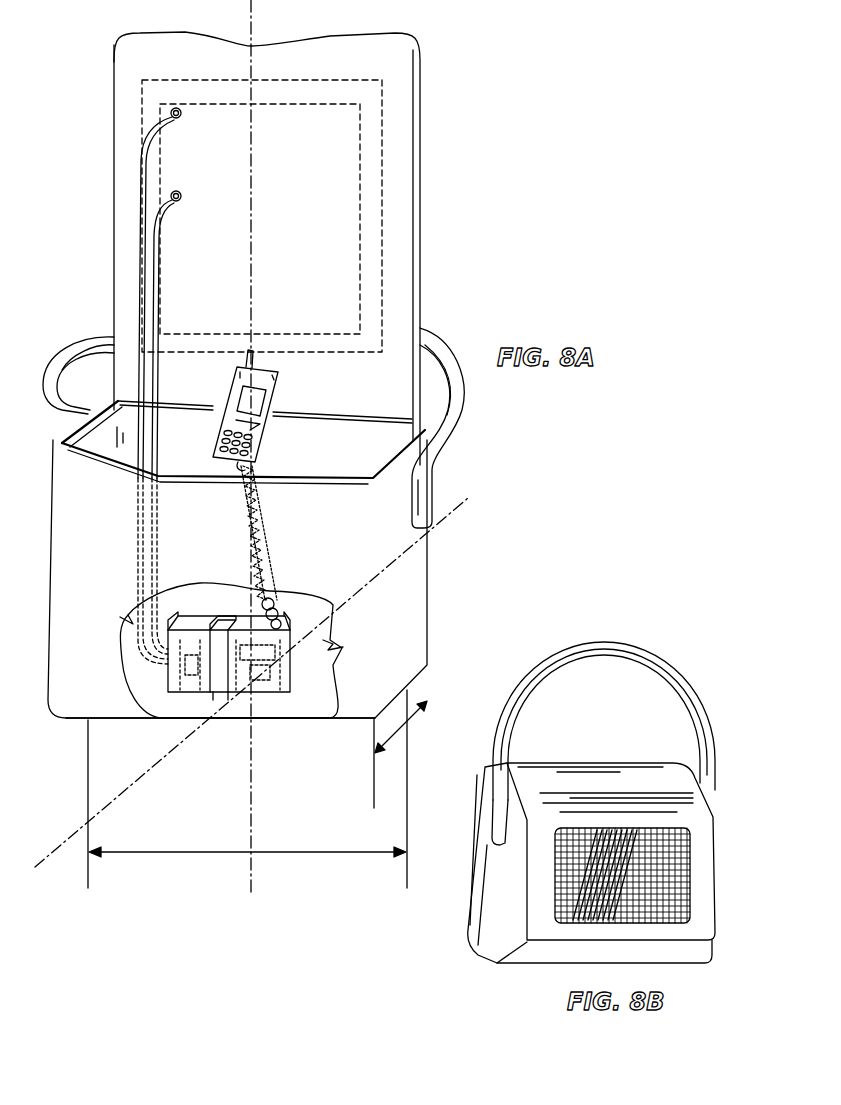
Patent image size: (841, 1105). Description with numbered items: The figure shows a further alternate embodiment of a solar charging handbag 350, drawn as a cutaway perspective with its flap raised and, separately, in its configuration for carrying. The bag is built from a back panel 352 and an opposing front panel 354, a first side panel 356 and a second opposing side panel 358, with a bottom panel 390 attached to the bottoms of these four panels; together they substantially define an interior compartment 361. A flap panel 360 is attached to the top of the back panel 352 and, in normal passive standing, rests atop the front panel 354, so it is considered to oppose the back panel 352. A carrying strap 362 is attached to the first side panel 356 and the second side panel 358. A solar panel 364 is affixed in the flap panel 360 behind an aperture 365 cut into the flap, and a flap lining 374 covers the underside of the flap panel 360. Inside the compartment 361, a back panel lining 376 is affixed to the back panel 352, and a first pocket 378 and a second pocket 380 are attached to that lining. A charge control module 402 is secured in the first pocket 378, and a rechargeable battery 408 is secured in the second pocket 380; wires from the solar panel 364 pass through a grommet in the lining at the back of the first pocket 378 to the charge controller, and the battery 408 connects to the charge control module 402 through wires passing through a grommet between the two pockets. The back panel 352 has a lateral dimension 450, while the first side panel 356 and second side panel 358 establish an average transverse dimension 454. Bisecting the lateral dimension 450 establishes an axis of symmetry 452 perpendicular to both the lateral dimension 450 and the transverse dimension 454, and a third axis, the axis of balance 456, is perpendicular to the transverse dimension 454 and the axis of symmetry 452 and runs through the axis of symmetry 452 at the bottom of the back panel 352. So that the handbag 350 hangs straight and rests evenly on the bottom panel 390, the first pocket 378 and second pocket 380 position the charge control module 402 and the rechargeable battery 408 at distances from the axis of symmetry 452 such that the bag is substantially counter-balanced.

In FIG. 8A, the solar charging handbag 350 is at (50, 496).
In FIG. 8B, the solar charging handbag 350 is at (733, 751).
In FIG. 8A, the back panel 352 is at (127, 420).
In FIG. 8A, the front panel 354 is at (107, 720).
In FIG. 8A, the first side panel 356 is at (78, 440).
In FIG. 8A, the second side panel 358 is at (428, 440).
In FIG. 8A, the flap panel 360 is at (115, 160).
In FIG. 8A, the interior compartment 361 is at (122, 400).
In FIG. 8A, the carrying strap 362 is at (437, 332).
In FIG. 8A, the solar panel 364 is at (382, 180).
In FIG. 8A, the aperture 365 is at (360, 117).
In FIG. 8A, the flap lining 374 is at (140, 60).
In FIG. 8A, the back panel lining 376 is at (193, 403).
In FIG. 8A, the first pocket 378 is at (175, 620).
In FIG. 8A, the second pocket 380 is at (287, 638).
In FIG. 8A, the bottom panel 390 is at (320, 653).
In FIG. 8A, the charge control module 402 is at (213, 690).
In FIG. 8A, the rechargeable battery 408 is at (262, 678).
In FIG. 8A, the lateral dimension 450 is at (278, 853).
In FIG. 8A, the axis of symmetry 452 is at (248, 793).
In FIG. 8A, the transverse dimension 454 is at (407, 728).
In FIG. 8A, the axis of balance 456 is at (82, 828).